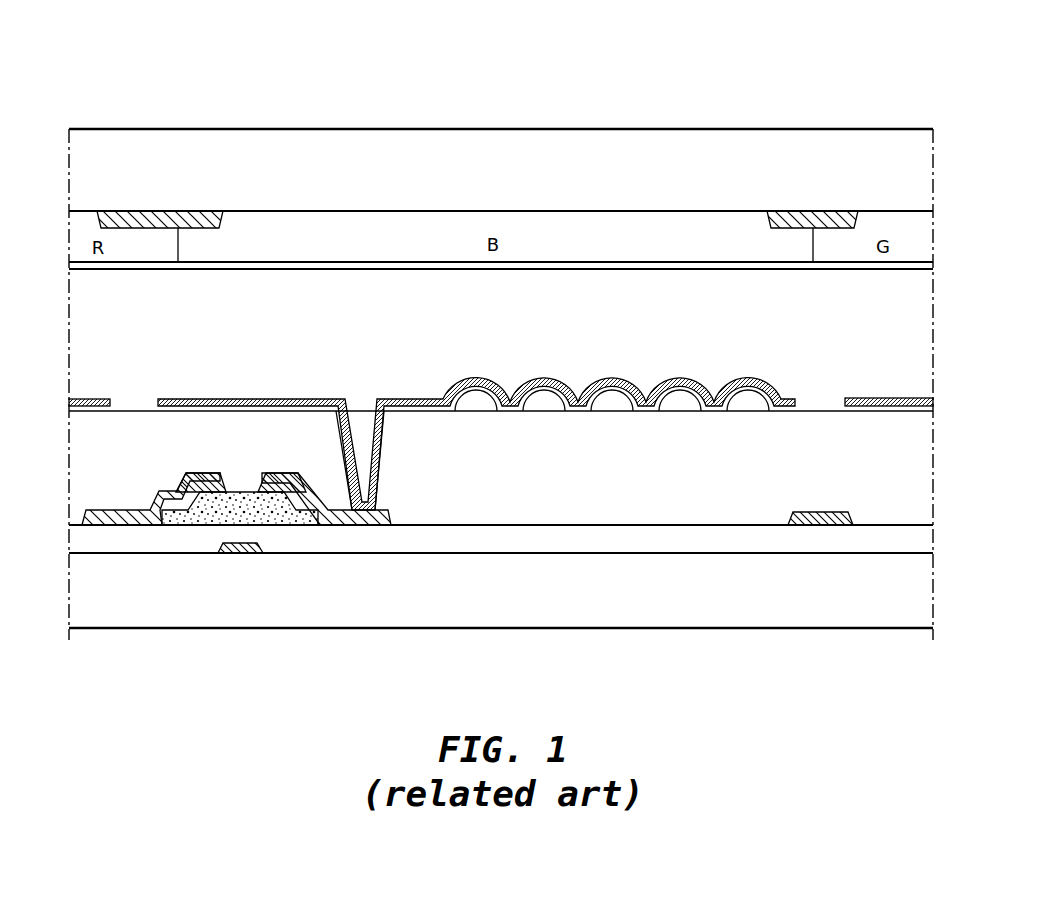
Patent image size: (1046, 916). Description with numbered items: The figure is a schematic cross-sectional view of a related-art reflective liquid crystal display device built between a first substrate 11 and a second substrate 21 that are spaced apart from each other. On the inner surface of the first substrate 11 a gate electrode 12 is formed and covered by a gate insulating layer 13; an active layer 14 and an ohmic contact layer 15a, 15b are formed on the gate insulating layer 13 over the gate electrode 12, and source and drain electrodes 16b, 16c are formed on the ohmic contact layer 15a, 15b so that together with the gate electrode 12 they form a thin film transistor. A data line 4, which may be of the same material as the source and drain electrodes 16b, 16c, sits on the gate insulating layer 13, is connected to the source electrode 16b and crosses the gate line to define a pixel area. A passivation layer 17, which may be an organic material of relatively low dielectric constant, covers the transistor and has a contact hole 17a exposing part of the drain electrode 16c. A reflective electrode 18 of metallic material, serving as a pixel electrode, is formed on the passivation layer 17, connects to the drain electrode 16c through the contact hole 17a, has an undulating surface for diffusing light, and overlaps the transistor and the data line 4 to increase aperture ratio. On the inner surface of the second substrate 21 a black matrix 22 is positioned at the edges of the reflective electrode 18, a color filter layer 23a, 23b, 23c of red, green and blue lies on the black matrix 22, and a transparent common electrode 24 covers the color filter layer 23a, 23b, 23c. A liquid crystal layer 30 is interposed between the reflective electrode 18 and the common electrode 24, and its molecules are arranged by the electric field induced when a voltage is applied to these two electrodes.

The data line 4 is at (818, 527).
The first substrate 11 is at (485, 608).
The gate electrode 12 is at (232, 555).
The gate insulating layer 13 is at (625, 538).
The active layer 14 is at (307, 520).
The ohmic contact layer 15a is at (210, 490).
The ohmic contact layer 15b is at (270, 490).
The source electrode 16b is at (170, 492).
The drain electrode 16c is at (318, 512).
The passivation layer 17 is at (133, 437).
The contact hole 17a is at (362, 416).
The reflective electrode 18 is at (91, 400).
The second substrate 21 is at (280, 145).
The black matrix 22 is at (185, 215).
The color filter layer 23a is at (85, 225).
The color filter layer 23b is at (432, 232).
The color filter layer 23c is at (903, 228).
The common electrode 24 is at (650, 265).
The liquid crystal layer 30 is at (495, 290).